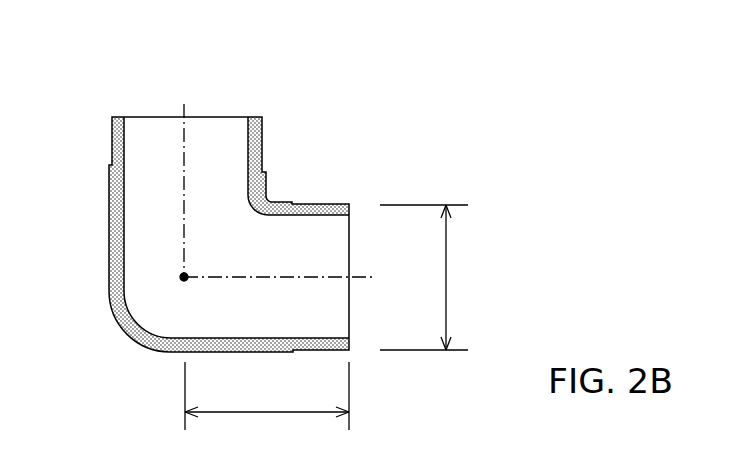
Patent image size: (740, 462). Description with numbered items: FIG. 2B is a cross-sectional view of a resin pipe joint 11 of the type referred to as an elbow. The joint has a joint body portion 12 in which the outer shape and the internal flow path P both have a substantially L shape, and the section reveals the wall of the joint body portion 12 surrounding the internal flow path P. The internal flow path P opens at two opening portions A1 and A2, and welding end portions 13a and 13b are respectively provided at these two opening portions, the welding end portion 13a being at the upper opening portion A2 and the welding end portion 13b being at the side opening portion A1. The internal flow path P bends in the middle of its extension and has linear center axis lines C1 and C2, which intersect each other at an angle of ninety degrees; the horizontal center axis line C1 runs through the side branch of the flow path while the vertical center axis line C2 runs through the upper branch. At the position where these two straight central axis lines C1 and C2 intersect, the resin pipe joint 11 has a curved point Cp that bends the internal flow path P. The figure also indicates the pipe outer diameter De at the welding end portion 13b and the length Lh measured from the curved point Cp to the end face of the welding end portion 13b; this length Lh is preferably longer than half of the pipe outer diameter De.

The resin pipe joint 11 is at (345, 104).
The joint body portion 12 is at (102, 330).
The welding end portion 13a is at (255, 117).
The welding end portion 13b is at (350, 204).
The opening portion A1 is at (352, 318).
The opening portion A2 is at (150, 116).
The center axis line C1 is at (297, 280).
The center axis line C2 is at (186, 176).
The curved point Cp is at (184, 281).
The internal flow path P is at (230, 239).
The pipe outer diameter De is at (432, 277).
The length Lh is at (267, 410).